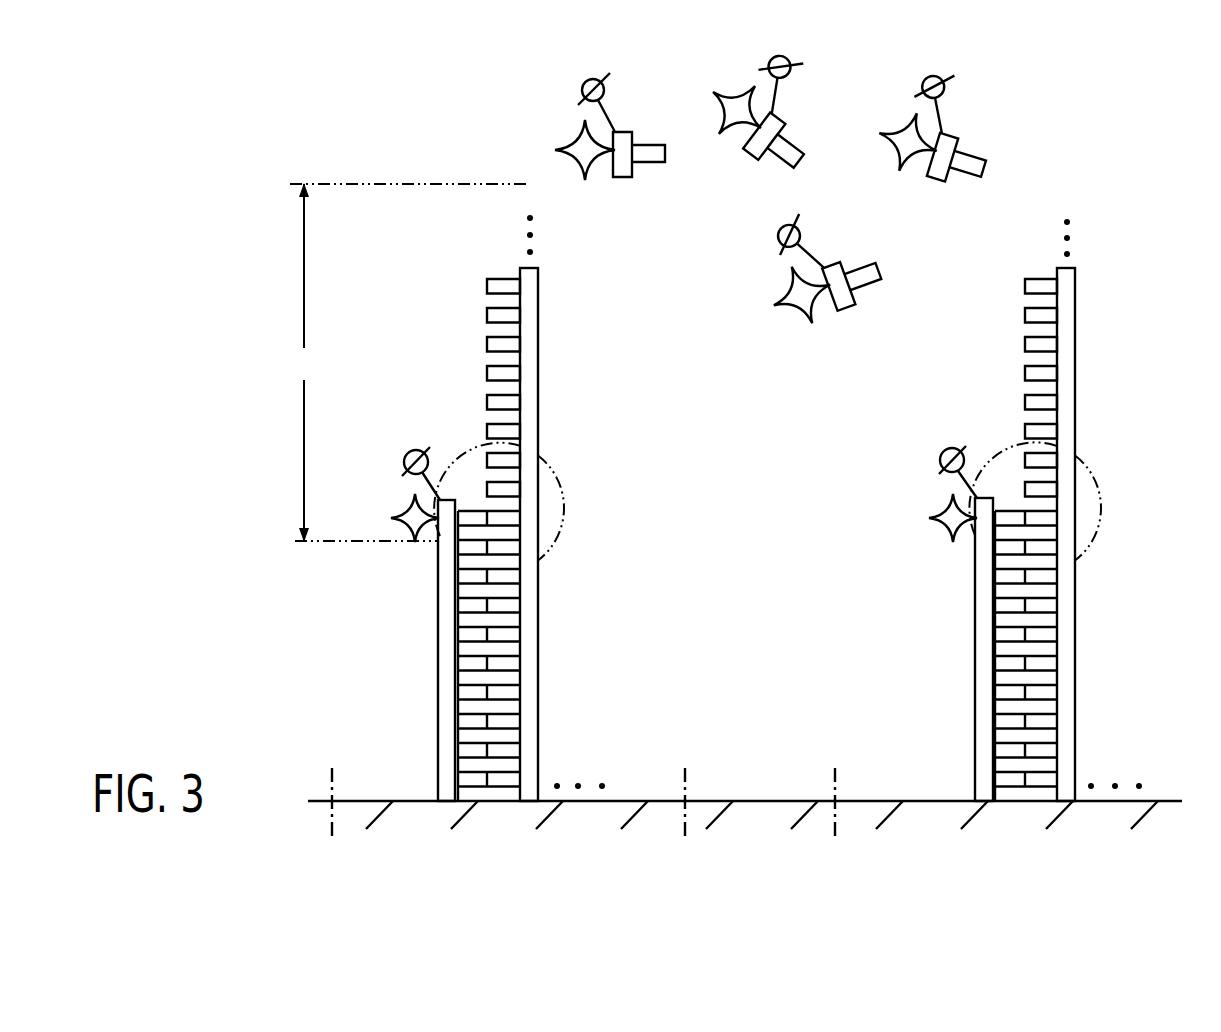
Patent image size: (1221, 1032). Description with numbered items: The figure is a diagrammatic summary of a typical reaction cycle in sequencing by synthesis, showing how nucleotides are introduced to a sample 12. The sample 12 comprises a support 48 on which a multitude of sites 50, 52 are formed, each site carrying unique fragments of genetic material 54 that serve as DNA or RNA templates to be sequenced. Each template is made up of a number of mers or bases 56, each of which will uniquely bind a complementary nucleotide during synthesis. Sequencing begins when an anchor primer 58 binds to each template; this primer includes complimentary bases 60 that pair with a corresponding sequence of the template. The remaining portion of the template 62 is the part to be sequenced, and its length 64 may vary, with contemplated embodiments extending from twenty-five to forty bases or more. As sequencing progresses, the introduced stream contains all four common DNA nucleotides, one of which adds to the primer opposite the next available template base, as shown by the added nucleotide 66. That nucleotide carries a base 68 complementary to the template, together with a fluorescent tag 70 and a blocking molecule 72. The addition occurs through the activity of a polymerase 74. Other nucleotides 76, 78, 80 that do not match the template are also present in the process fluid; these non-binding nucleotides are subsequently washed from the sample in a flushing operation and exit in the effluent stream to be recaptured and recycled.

The sample 12 is at (338, 876).
The support 48 is at (770, 856).
The site 50 is at (548, 821).
The site 52 is at (1065, 822).
The fragments of genetic material 54 is at (530, 626).
The bases 56 is at (505, 693).
The anchor primer 58 is at (445, 589).
The complimentary bases 60 is at (467, 693).
The remaining portion of the template 62 is at (430, 341).
The length 64 is at (410, 362).
The added nucleotide 66 is at (385, 463).
The base 68 is at (478, 520).
The fluorescent tag 70 is at (396, 521).
The blocking molecule 72 is at (413, 450).
The polymerase 74 is at (548, 557).
The nucleotides 76 is at (604, 195).
The nucleotide 78 is at (749, 167).
The nucleotide 80 is at (764, 319).